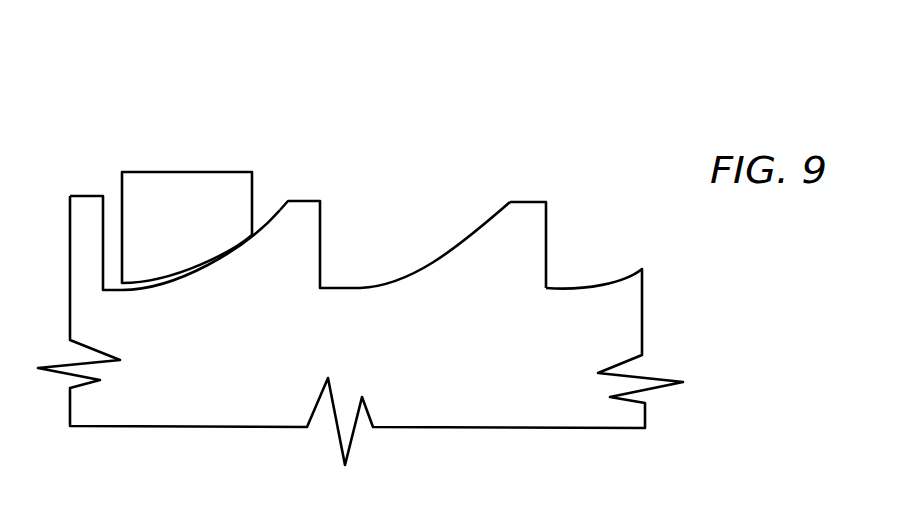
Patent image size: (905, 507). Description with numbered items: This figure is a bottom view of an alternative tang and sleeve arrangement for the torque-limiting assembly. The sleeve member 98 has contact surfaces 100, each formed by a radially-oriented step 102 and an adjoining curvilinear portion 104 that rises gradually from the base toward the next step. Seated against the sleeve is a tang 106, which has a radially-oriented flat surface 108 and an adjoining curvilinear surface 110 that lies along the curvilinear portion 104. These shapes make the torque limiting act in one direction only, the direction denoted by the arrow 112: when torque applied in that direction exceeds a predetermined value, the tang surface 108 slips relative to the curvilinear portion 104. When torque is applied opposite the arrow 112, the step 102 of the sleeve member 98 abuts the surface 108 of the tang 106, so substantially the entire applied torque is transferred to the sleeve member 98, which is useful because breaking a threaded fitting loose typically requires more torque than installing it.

The sleeve member 98 is at (518, 407).
The contact surfaces 100 is at (487, 190).
The radially-oriented step 102 is at (323, 213).
The curvilinear portion 104 is at (462, 250).
The tang 106 is at (183, 157).
The radially-oriented flat surface 108 is at (120, 187).
The curvilinear surface 110 is at (207, 270).
The arrow 112 is at (328, 85).